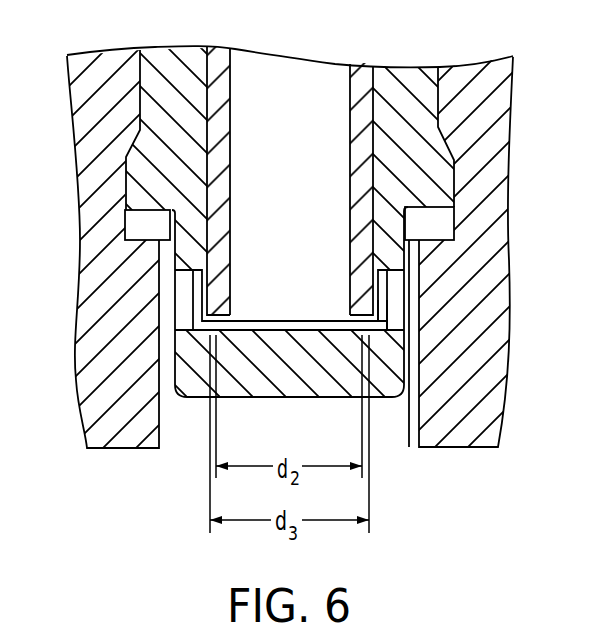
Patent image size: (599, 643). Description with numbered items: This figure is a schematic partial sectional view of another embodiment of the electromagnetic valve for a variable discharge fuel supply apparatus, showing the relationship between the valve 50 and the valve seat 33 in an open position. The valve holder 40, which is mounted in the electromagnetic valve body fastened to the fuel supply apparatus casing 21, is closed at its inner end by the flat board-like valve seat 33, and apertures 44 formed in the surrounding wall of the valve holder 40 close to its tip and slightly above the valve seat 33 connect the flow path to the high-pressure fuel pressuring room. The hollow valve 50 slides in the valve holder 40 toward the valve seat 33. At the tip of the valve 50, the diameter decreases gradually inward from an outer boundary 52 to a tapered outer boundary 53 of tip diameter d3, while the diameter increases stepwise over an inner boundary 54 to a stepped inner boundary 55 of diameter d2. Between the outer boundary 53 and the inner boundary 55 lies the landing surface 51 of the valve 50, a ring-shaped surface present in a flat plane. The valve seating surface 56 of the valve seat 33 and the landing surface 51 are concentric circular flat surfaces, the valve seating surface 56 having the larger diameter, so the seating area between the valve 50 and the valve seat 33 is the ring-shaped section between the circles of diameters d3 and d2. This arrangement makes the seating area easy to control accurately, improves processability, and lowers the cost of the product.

The fuel supply apparatus casing 21 is at (87, 197).
The valve holder 40 is at (432, 95).
The valve 50 is at (293, 73).
The inner boundary 54 is at (352, 215).
The outer boundary 52 is at (378, 288).
The outer boundary 53 is at (372, 317).
The inner boundary 55 is at (362, 320).
The valve seating surface 56 is at (243, 328).
The apertures 44 is at (183, 293).
The landing surface 51 is at (362, 330).
The valve seat 33 is at (384, 387).